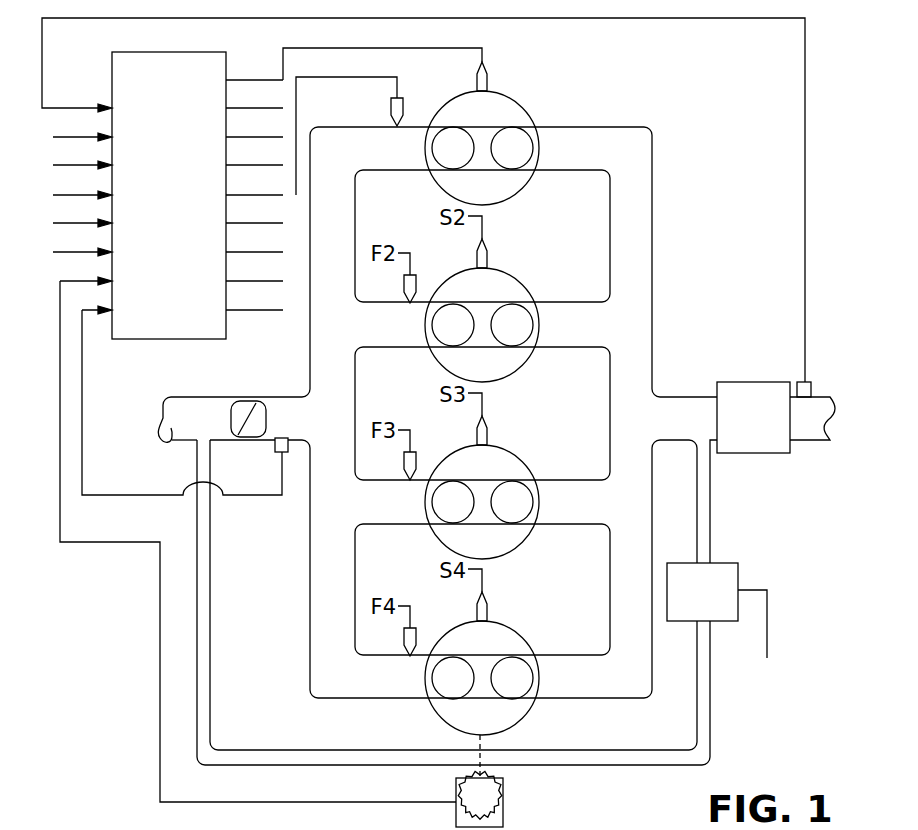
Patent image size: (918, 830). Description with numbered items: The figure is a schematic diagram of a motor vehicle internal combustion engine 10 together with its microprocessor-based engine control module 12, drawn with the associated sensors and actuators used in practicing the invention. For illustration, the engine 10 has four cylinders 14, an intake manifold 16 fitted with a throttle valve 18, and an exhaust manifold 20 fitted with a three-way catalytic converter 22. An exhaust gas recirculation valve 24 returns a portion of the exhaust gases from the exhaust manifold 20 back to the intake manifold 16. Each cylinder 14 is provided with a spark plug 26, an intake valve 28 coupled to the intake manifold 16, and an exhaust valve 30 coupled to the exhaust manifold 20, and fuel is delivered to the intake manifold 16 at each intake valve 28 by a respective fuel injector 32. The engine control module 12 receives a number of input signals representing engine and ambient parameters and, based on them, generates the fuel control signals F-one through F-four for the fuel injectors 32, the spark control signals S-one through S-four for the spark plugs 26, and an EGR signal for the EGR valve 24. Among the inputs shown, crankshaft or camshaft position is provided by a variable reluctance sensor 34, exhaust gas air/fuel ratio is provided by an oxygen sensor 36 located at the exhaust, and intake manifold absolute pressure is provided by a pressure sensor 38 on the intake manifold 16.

The internal combustion engine 10 is at (694, 114).
The engine control module 12 is at (165, 339).
The cylinder 14 is at (522, 190).
The intake manifold 16 is at (310, 605).
The throttle valve 18 is at (241, 409).
The exhaust manifold 20 is at (639, 205).
The three-way catalytic converter 22 is at (755, 382).
The exhaust gas recirculation valve 24 is at (721, 565).
The spark plug 26 is at (488, 82).
The intake valve 28 is at (449, 128).
The exhaust valve 30 is at (538, 142).
The fuel injector 32 is at (391, 108).
The variable reluctance sensor 34 is at (503, 796).
The oxygen sensor 36 is at (812, 386).
The pressure sensor 38 is at (276, 450).